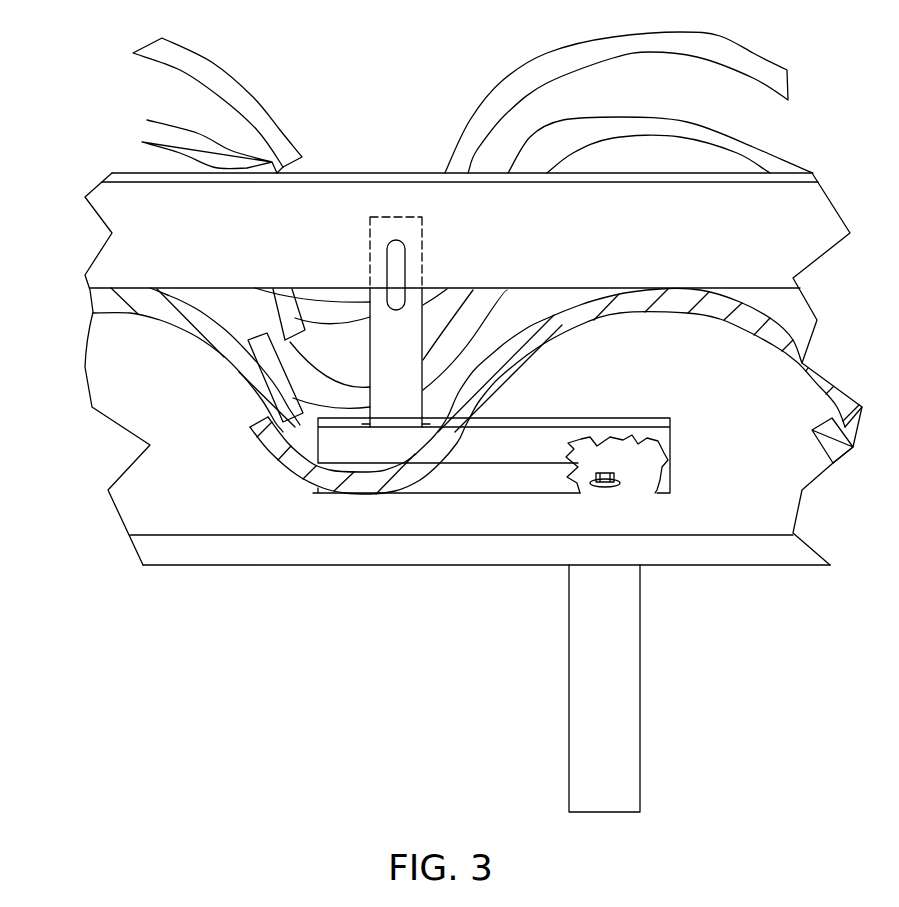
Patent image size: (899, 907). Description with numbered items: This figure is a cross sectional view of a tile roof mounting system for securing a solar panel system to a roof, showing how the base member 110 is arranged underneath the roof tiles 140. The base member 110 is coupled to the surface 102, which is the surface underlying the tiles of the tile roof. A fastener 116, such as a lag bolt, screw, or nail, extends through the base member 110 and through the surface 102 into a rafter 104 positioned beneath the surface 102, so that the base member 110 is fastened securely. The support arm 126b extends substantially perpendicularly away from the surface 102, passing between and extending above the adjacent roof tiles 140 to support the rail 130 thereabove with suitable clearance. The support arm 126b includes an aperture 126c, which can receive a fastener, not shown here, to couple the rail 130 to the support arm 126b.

The surface 102 is at (134, 556).
The rafter 104 is at (573, 612).
The base member 110 is at (600, 418).
The fastener 116 is at (598, 489).
The support arm 126b is at (363, 322).
The aperture 126c is at (388, 250).
The rail 130 is at (97, 252).
The roof tile 140 is at (248, 406).